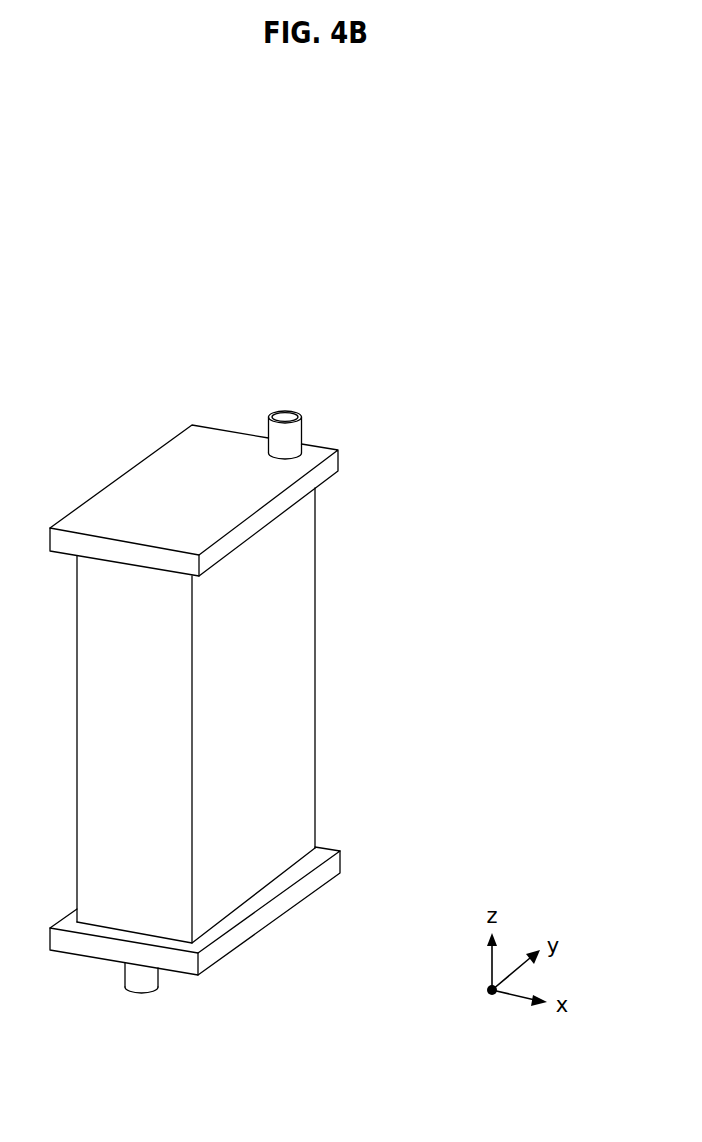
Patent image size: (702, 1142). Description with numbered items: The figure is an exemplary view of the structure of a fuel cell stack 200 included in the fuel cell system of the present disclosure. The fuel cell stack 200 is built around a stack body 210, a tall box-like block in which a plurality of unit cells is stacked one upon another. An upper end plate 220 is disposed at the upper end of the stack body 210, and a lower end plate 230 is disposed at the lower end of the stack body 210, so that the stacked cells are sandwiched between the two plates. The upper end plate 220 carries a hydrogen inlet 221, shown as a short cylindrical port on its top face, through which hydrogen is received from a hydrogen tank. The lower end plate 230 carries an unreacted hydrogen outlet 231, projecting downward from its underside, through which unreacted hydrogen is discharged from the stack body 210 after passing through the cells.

The fuel cell stack 200 is at (434, 274).
The stack body 210 is at (303, 675).
The upper end plate 220 is at (133, 497).
The hydrogen inlet 221 is at (283, 414).
The lower end plate 230 is at (312, 883).
The unreacted hydrogen outlet 231 is at (140, 982).